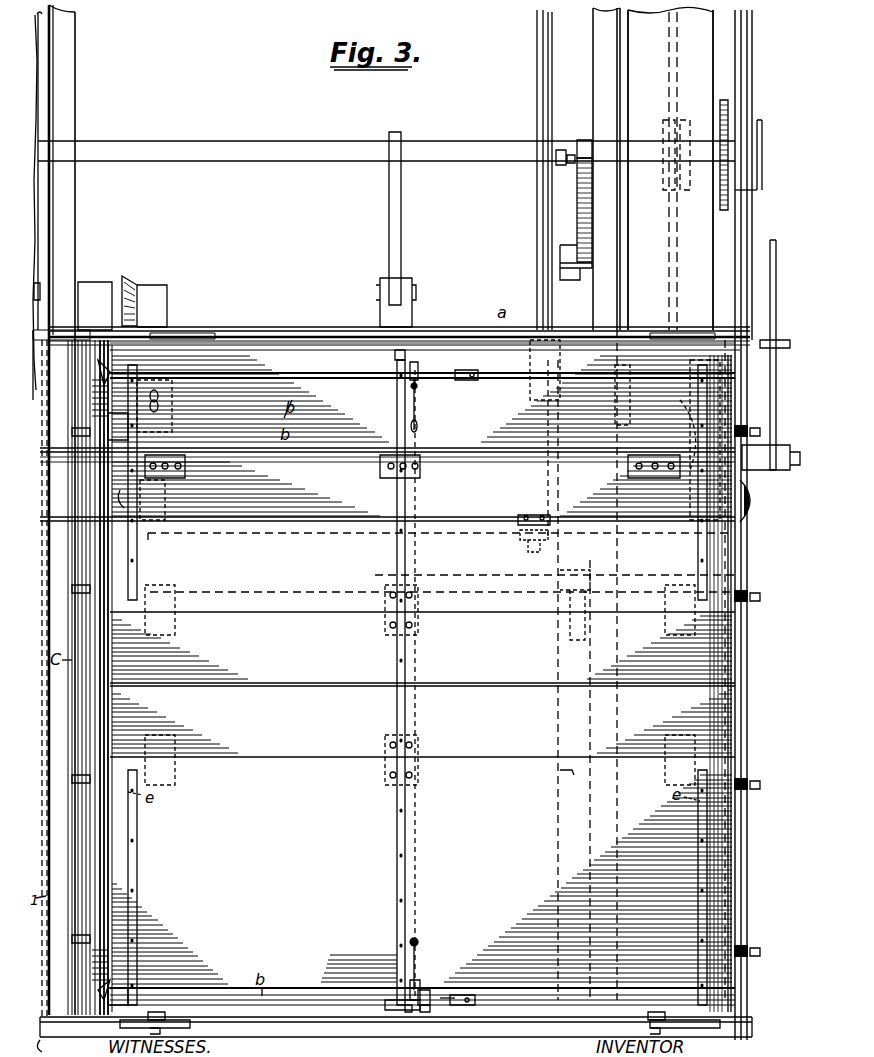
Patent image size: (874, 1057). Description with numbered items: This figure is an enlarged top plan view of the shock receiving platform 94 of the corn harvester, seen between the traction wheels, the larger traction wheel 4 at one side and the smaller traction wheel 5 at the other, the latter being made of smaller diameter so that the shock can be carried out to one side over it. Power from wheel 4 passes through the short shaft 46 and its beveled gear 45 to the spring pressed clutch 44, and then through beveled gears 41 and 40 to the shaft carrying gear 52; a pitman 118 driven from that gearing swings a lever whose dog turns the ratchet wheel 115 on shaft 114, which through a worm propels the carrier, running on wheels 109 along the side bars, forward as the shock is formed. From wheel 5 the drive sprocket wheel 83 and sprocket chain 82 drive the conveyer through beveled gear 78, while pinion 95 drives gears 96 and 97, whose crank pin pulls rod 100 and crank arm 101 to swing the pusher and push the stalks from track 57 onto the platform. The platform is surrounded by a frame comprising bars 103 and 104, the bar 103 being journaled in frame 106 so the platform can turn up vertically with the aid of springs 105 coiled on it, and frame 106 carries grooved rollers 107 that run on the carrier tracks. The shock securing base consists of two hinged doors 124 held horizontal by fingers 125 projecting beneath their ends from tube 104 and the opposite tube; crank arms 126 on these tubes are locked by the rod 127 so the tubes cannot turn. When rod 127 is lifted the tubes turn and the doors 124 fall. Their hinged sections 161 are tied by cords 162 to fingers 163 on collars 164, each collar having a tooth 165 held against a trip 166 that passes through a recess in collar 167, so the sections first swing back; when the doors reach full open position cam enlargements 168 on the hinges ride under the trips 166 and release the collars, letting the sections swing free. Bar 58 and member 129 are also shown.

The traction wheel 4 is at (40, 78).
The traction wheel 5 is at (670, 168).
The beveled gear 40 is at (138, 500).
The beveled gear 41 is at (165, 480).
The spring pressed clutch 44 is at (172, 396).
The beveled gear 45 is at (137, 283).
The short shaft 46 is at (93, 286).
The gear 52 is at (40, 300).
The track 57 is at (387, 465).
The horizontal bar 58 is at (466, 450).
The beveled gear 78 is at (760, 502).
The sprocket chain 82 is at (725, 222).
The drive sprocket wheel 83 is at (728, 110).
The platform 94 is at (588, 669).
The pinion 95 is at (583, 140).
The gear 96 is at (592, 185).
The gear 97 is at (592, 230).
The rod 100 is at (558, 268).
The crank arm 101 is at (565, 652).
The bar 103 is at (110, 707).
The bar 104 is at (745, 385).
The springs 105 is at (108, 405).
The frame 106 is at (333, 330).
The grooved rollers 107 is at (178, 336).
The wheels 109 is at (600, 1037).
The shaft 114 is at (537, 215).
The ratchet wheel 115 is at (520, 515).
The pitman 118 is at (220, 535).
The doors 124 is at (254, 670).
The fingers 125 is at (748, 428).
The crank arms 126 is at (72, 335).
The rod 127 is at (250, 340).
The vertical lever 129 is at (401, 225).
The hinged sections 161 is at (422, 684).
The cords 162 is at (420, 572).
The fingers 163 is at (418, 390).
The collars 164 is at (430, 992).
The tooth or shoulder 165 is at (412, 1012).
The trip 166 is at (463, 380).
The collar 167 is at (430, 1010).
The cam enlargements 168 is at (393, 365).